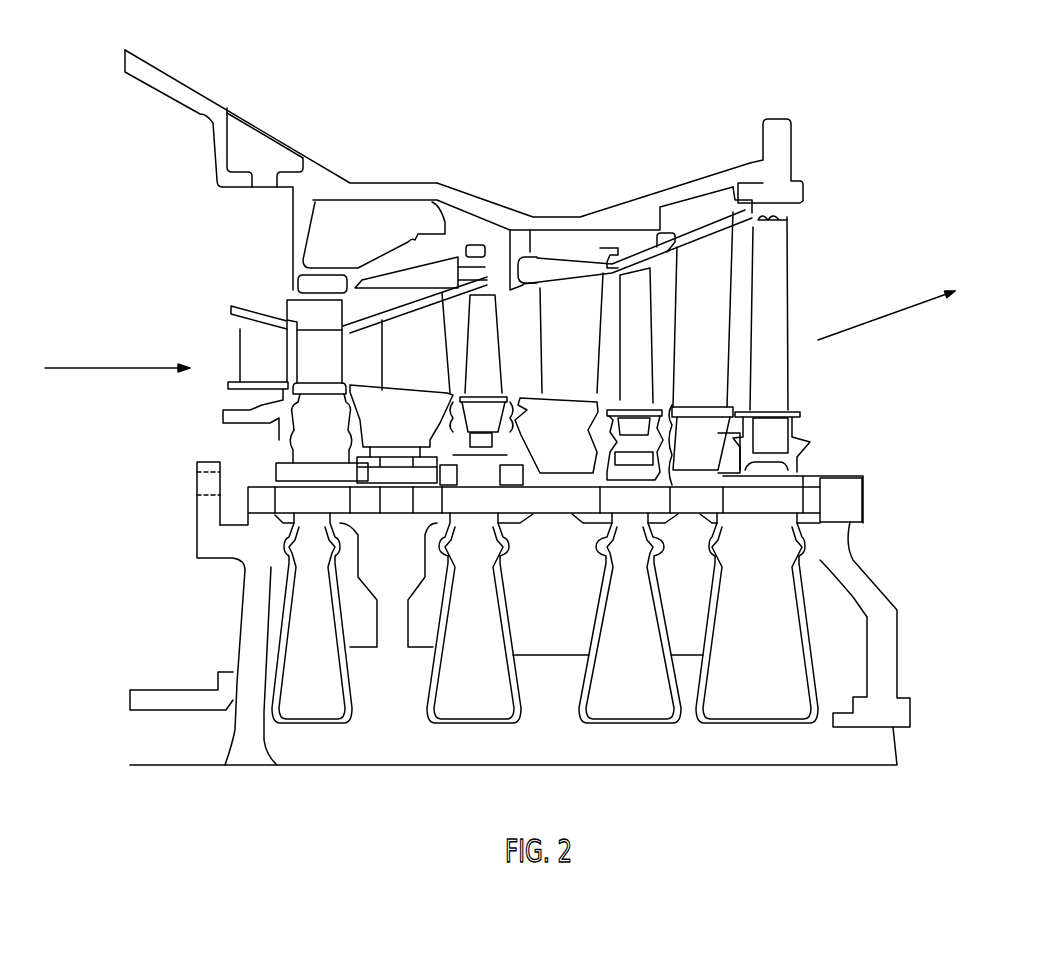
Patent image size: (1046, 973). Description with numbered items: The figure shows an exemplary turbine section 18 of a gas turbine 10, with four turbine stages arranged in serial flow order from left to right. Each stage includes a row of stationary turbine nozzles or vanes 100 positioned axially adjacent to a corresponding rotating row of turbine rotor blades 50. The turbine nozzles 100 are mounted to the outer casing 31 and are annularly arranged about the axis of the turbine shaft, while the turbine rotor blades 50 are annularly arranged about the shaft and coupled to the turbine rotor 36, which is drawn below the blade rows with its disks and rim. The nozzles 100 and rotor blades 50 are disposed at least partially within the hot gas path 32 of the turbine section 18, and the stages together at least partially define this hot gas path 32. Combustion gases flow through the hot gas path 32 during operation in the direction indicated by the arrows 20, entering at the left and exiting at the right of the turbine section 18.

The gas turbine 10 is at (612, 200).
The turbine section 18 is at (342, 93).
The arrows 20 is at (75, 367).
The outer casing 31 is at (420, 240).
The hot gas path 32 is at (372, 362).
The turbine rotor 36 is at (378, 743).
The turbine rotor blades 50 is at (332, 369).
The turbine nozzles or vanes 100 is at (278, 367).